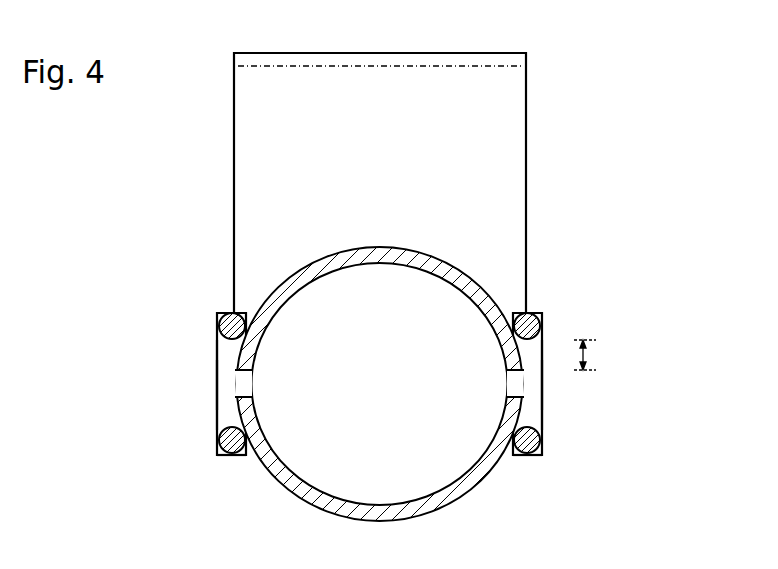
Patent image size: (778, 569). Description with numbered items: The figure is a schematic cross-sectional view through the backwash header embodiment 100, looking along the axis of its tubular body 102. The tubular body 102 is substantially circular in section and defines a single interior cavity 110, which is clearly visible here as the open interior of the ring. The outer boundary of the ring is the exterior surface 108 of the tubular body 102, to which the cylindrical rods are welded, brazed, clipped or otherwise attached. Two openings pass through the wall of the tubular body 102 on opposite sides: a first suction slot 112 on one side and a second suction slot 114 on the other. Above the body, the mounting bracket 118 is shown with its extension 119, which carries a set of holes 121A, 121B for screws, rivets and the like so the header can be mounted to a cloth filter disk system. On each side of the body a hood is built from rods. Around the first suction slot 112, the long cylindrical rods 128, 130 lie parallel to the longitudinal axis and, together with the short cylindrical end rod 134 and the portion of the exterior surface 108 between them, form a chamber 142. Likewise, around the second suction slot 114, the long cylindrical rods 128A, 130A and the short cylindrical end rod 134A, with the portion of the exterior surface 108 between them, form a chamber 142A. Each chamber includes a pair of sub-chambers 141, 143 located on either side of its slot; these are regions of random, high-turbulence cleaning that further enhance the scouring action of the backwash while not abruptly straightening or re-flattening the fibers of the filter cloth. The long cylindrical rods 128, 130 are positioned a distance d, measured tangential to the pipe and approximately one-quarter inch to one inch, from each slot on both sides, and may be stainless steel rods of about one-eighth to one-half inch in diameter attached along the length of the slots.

The backwash header embodiment 100 is at (645, 147).
The tubular body 102 is at (338, 507).
The exterior surface 108 is at (420, 517).
The cavity 110 is at (392, 358).
The first suction slot 112 is at (508, 383).
The second suction slot 114 is at (232, 391).
The mounting bracket 118 is at (528, 103).
The extension 119 is at (528, 62).
The hole 121A is at (286, 56).
The hole 121B is at (478, 53).
The long cylindrical rod 128 is at (535, 458).
The long cylindrical rod 128A is at (220, 455).
The long cylindrical rod 130 is at (543, 311).
The long cylindrical rod 130A is at (215, 313).
The short cylindrical end rod 134 is at (543, 412).
The short cylindrical end rod 134A is at (225, 367).
The sub-chamber 141 is at (227, 350).
The chamber 142 is at (535, 400).
The chamber 142A is at (223, 380).
The sub-chamber 143 is at (227, 418).
The distance d is at (588, 353).